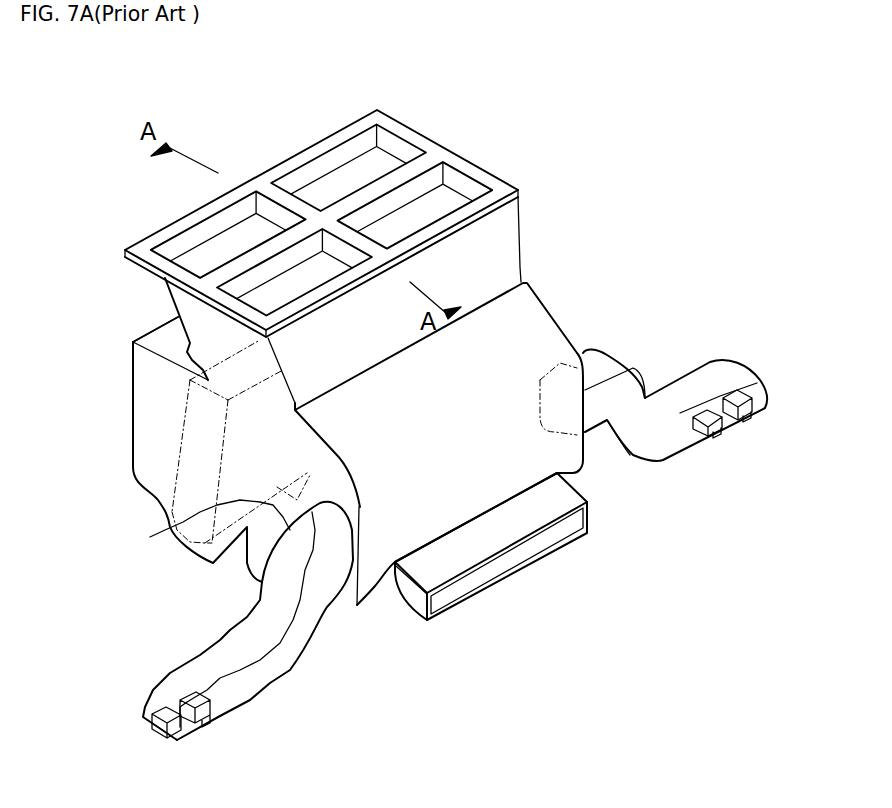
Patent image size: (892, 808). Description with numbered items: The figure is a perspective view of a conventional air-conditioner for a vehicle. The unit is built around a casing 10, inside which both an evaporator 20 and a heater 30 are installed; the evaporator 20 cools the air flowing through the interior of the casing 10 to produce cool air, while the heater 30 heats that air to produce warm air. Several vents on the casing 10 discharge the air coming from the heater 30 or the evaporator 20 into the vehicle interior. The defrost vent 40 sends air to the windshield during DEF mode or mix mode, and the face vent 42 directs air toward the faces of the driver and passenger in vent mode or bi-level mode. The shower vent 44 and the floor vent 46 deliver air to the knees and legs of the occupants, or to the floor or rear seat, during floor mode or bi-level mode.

The casing 10 is at (148, 393).
The evaporator 20 is at (180, 460).
The heater 30 is at (183, 527).
The defrost vent 40 is at (358, 223).
The face vent 42 is at (323, 279).
The shower vent 44 is at (583, 462).
The floor vent 46 is at (527, 553).